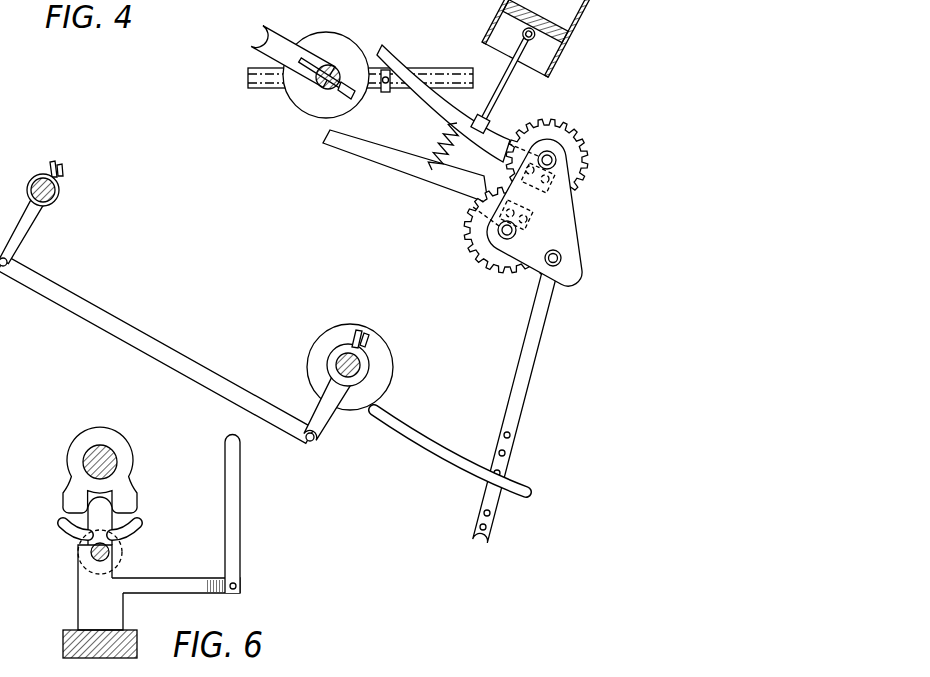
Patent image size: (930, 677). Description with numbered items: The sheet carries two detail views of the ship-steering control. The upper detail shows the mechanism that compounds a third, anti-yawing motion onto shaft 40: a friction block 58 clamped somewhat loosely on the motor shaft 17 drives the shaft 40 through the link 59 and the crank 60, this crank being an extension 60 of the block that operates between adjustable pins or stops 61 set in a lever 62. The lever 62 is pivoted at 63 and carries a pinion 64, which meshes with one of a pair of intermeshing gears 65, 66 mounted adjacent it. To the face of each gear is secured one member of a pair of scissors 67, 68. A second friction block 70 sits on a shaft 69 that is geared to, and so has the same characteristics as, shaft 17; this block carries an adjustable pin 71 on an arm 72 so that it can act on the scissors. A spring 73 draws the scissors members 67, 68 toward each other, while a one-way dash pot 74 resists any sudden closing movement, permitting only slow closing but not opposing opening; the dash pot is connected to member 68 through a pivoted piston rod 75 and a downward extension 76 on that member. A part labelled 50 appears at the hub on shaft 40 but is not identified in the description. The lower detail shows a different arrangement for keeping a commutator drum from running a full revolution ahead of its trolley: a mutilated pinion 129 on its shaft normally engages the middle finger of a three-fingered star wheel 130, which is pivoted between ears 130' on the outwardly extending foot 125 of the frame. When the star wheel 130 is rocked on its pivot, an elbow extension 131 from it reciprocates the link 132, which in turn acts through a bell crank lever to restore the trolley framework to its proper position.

In FIG. 4, the motor shaft 17 is at (360, 368).
In FIG. 4, the shaft 40 is at (57, 192).
In FIG. 4, the rock shaft arm 50 is at (28, 190).
In FIG. 4, the friction block 58 is at (330, 372).
In FIG. 4, the link 59 is at (128, 325).
In FIG. 4, the crank 60 is at (433, 468).
In FIG. 4, the adjustable pins or stops 61 is at (500, 473).
In FIG. 4, the lever 62 is at (528, 383).
In FIG. 4, the pivot 63 is at (557, 250).
In FIG. 4, the pinion 64 is at (562, 256).
In FIG. 4, the gear 65 is at (470, 245).
In FIG. 4, the gear 66 is at (570, 125).
In FIG. 4, the scissors member 67 is at (442, 188).
In FIG. 4, the scissors member 68 is at (432, 108).
In FIG. 4, the shaft 69 is at (332, 68).
In FIG. 4, the friction block 70 is at (297, 48).
In FIG. 4, the adjustable pin 71 is at (386, 92).
In FIG. 4, the arm 72 is at (427, 73).
In FIG. 4, the spring 73 is at (445, 160).
In FIG. 4, the one way dash pot 74 is at (565, 47).
In FIG. 4, the pivoted piston rod 75 is at (505, 85).
In FIG. 4, the downward extension 76 is at (485, 122).
In FIG. 6, the foot 125 is at (63, 645).
In FIG. 6, the mutilated pinion 129 is at (128, 474).
In FIG. 6, the three-fingered star wheel 130 is at (129, 535).
In FIG. 6, the ears 130' is at (106, 587).
In FIG. 6, the elbow extension 131 is at (176, 592).
In FIG. 6, the link 132 is at (235, 525).